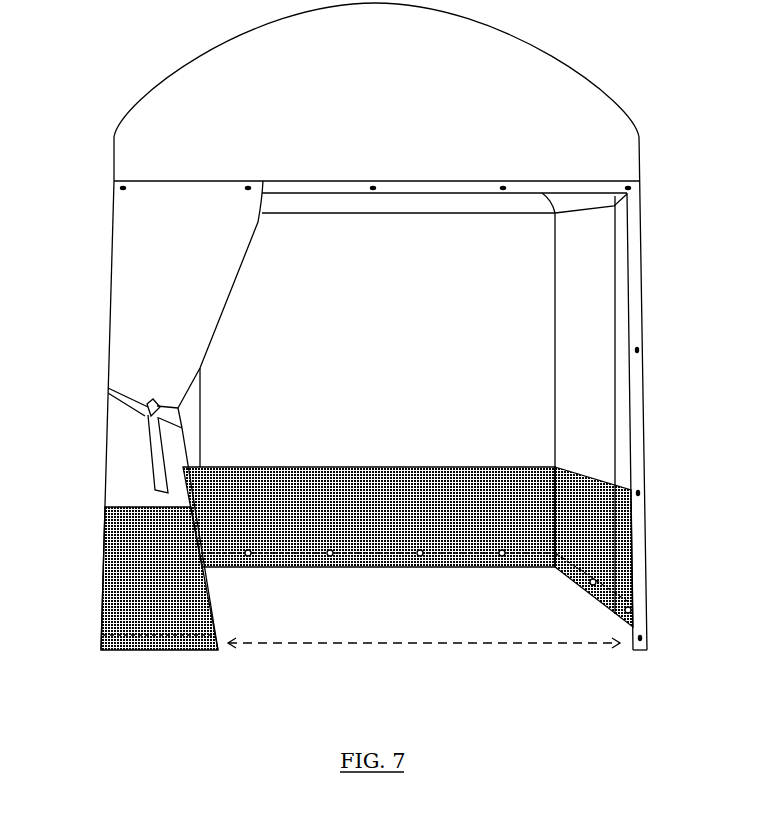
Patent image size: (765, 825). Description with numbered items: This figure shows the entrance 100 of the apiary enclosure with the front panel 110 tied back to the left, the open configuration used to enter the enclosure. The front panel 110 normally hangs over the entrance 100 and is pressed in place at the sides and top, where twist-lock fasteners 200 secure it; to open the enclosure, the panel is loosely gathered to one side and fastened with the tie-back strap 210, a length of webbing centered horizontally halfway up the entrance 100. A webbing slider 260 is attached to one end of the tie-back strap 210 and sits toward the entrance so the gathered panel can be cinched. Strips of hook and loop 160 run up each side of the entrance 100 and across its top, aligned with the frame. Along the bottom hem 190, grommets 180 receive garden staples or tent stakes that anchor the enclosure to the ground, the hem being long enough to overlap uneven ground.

The entrance 100 is at (374, 651).
The front panel 110 is at (117, 290).
The hook and loop 160 is at (643, 233).
The grommets 180 is at (503, 558).
The bottom hem 190 is at (95, 635).
The twist-lock fasteners 200 is at (644, 353).
The tie-back strap 210 is at (110, 393).
The webbing slider 260 is at (146, 416).